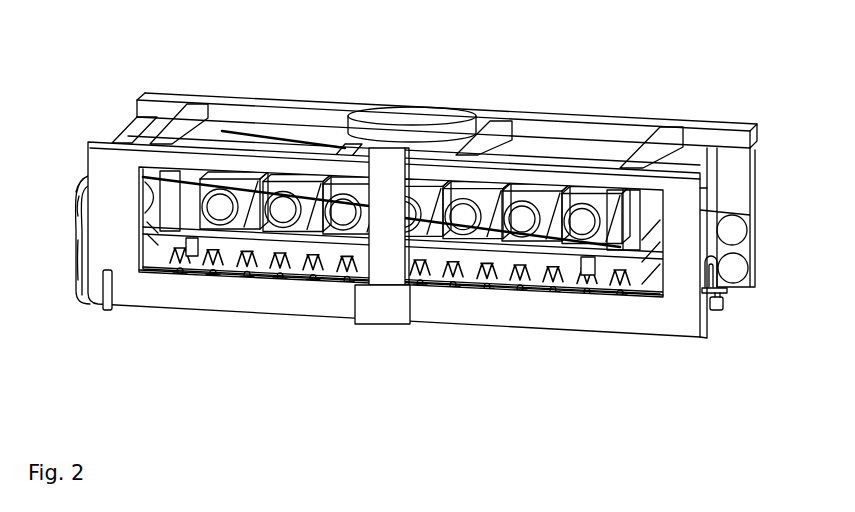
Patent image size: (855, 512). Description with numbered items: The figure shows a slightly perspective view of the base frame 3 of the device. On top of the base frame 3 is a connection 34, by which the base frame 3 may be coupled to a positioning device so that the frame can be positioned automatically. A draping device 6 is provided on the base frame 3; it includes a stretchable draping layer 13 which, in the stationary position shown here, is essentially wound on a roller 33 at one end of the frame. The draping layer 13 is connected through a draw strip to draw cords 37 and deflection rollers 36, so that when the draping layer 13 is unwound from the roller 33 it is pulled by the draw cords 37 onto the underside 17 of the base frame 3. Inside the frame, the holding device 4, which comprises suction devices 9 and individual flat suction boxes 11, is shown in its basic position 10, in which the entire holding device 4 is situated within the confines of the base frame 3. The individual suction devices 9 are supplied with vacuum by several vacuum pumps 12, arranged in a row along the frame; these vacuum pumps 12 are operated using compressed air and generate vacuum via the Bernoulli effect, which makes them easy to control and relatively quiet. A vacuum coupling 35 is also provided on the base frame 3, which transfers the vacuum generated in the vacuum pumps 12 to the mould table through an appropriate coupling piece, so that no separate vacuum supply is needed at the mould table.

The base frame 3 is at (672, 102).
The holding device 4 is at (610, 293).
The draping device 6 is at (78, 232).
The suction devices 9 is at (546, 290).
The basic position 10 is at (633, 293).
The flat suction boxes 11 is at (507, 288).
The vacuum pumps 12 is at (530, 210).
The draping layer 13 is at (78, 282).
The underside 17 is at (178, 318).
The roller 33 is at (75, 185).
The connection 34 is at (397, 117).
The vacuum coupling 35 is at (722, 313).
The deflection rollers 36 is at (733, 273).
The draw cords 37 is at (265, 133).